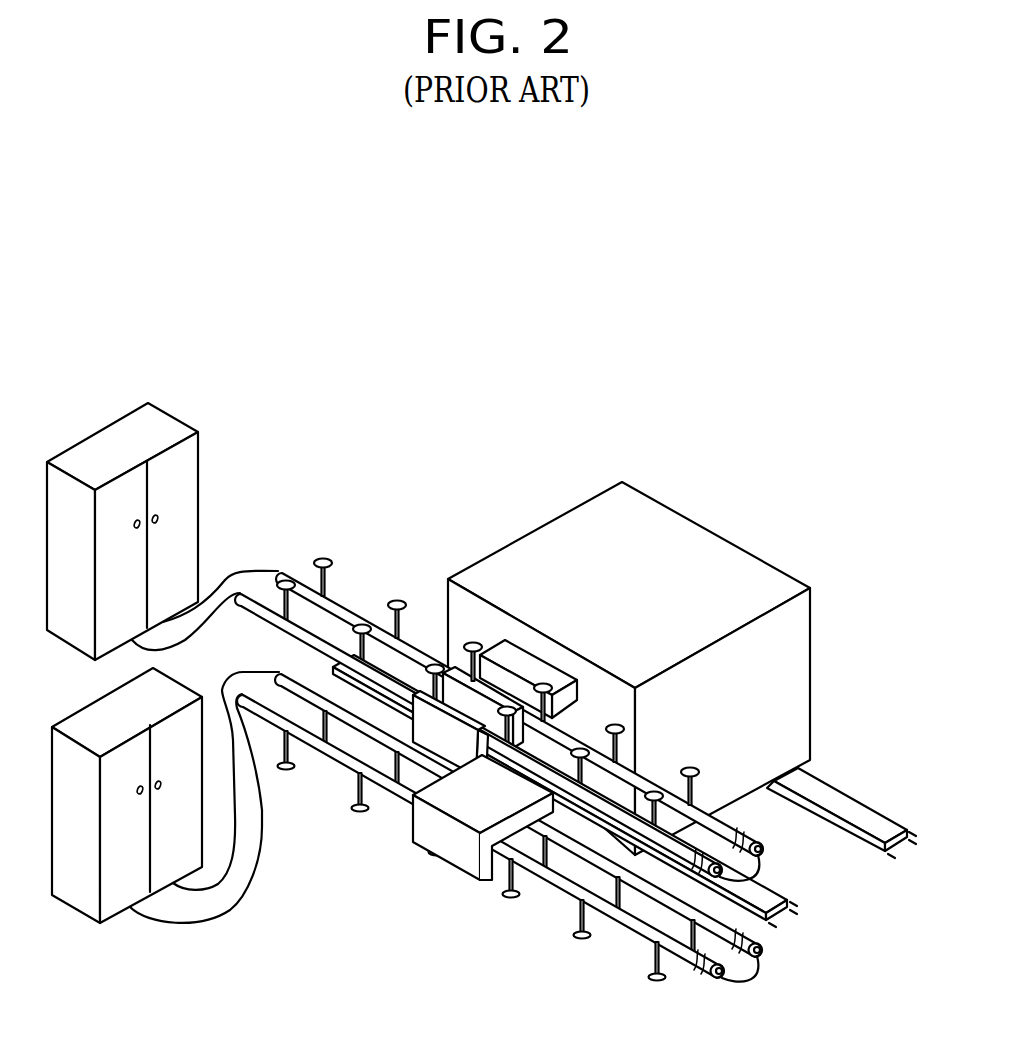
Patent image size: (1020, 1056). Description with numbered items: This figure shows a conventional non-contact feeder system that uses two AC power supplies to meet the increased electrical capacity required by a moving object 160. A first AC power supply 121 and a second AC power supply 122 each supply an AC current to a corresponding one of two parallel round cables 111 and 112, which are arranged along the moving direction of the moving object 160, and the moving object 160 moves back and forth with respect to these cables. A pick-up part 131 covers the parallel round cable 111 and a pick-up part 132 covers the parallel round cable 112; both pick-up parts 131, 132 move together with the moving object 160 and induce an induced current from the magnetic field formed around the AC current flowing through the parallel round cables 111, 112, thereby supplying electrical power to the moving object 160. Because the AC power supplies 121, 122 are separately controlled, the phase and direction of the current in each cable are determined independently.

The parallel round cable 111 is at (312, 635).
The parallel round cable 112 is at (640, 885).
The AC power supply 121 is at (131, 414).
The AC power supply 122 is at (118, 916).
The pick-up part 131 is at (428, 740).
The pick-up part 132 is at (457, 847).
The moving object 160 is at (698, 535).